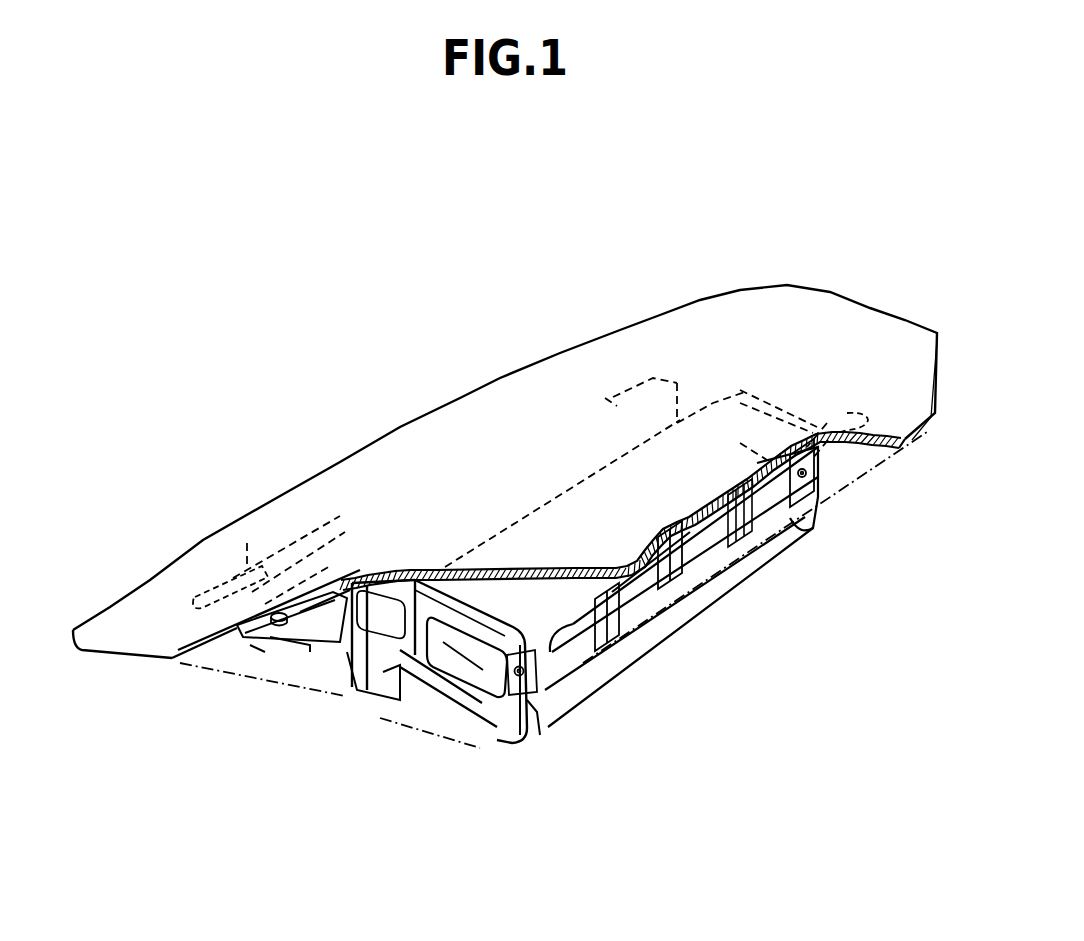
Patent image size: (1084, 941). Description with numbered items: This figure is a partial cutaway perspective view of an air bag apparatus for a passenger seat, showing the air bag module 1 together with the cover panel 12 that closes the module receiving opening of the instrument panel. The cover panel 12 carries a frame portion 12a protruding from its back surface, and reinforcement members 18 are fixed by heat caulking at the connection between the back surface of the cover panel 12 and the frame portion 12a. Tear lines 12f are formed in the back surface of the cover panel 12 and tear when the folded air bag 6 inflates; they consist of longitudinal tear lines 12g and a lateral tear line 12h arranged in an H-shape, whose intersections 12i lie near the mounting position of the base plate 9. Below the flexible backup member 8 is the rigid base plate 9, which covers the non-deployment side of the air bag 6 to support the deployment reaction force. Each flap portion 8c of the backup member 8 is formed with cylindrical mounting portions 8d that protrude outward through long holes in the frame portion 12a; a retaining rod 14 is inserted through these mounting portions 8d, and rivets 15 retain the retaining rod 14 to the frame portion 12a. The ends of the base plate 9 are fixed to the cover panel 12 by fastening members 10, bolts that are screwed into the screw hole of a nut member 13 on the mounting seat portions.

The air bag module 1 is at (412, 725).
The air bag 6 is at (472, 680).
The backup member 8 is at (443, 727).
The flap portion 8c is at (543, 727).
The cylindrical mounting portion 8d is at (580, 650).
The base plate 9 is at (345, 655).
The fastening member 10 is at (250, 642).
The cover panel 12 is at (527, 397).
The frame portion 12a is at (740, 543).
The tear lines 12f is at (603, 236).
The longitudinal tear lines 12g is at (655, 378).
The lateral tear line 12h is at (680, 420).
The intersection 12i is at (713, 403).
The nut member 13 is at (298, 650).
The retaining rod 14 is at (637, 618).
The rivet 15 is at (537, 716).
The reinforcement member 18 is at (226, 588).